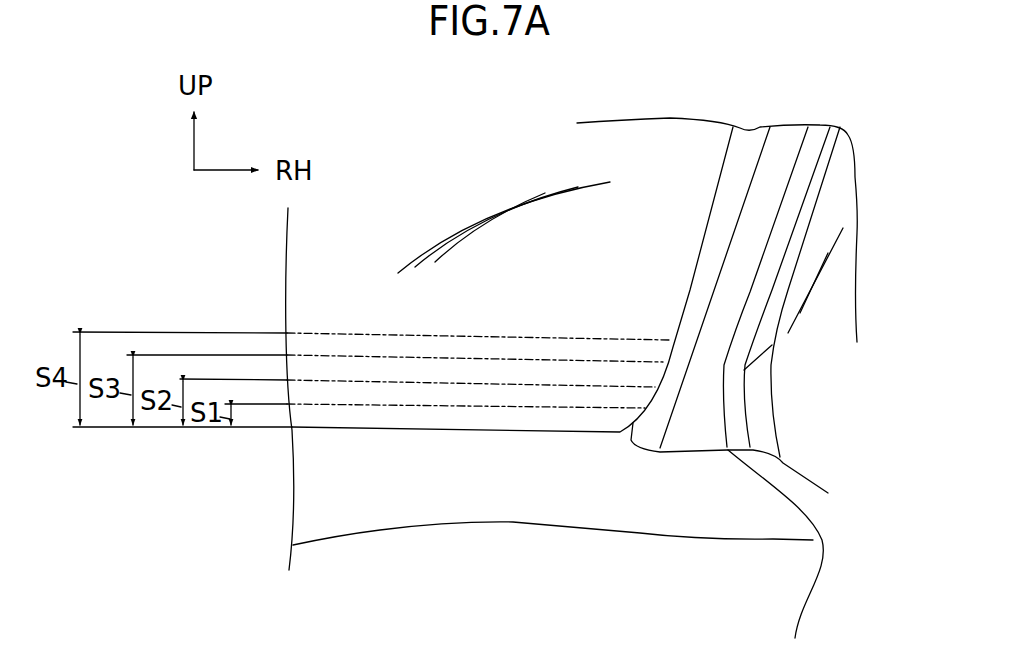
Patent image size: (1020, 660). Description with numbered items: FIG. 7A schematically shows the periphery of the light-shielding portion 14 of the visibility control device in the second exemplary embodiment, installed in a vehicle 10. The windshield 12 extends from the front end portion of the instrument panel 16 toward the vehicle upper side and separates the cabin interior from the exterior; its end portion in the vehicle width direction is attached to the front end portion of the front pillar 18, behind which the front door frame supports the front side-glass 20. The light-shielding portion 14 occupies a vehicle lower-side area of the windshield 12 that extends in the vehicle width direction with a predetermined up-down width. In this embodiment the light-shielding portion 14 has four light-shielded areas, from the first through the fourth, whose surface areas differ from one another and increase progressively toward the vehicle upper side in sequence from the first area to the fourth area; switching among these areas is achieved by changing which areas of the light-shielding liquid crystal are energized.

The vehicle 10 is at (240, 268).
The windshield 12 is at (318, 236).
The light-shielding portion 14 is at (362, 333).
The instrument panel 16 is at (453, 492).
The front pillar 18 is at (775, 182).
The front side-glass 20 is at (830, 278).